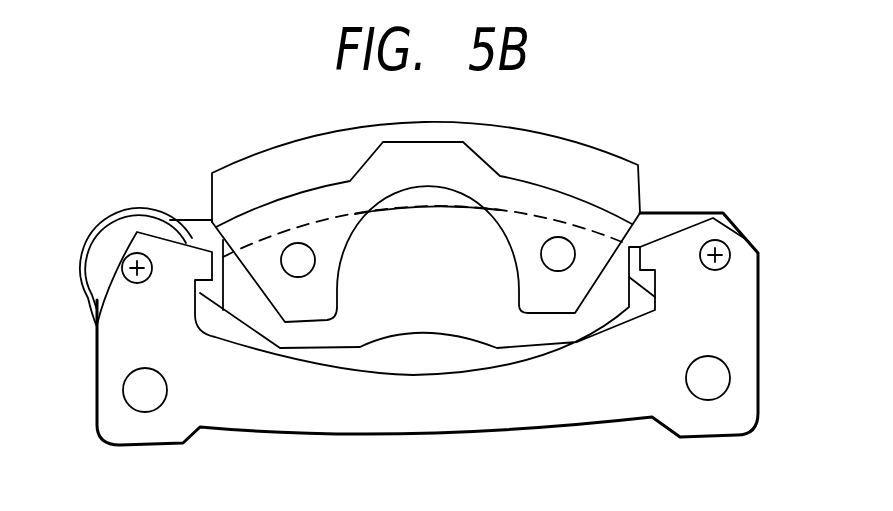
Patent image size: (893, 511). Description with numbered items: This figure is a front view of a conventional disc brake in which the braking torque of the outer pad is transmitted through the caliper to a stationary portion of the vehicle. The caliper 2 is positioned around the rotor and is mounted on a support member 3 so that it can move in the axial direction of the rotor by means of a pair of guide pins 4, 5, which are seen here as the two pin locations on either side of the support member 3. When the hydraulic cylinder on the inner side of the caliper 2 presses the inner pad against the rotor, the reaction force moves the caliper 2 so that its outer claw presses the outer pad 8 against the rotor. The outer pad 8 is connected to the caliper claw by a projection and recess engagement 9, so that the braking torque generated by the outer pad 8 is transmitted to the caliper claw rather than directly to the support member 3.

The caliper 2 is at (624, 168).
The support member 3 is at (745, 330).
The guide pin 4 is at (97, 325).
The guide pin 5 is at (729, 253).
The outer pad 8 is at (435, 311).
The projection and recess engagement 9 is at (318, 262).